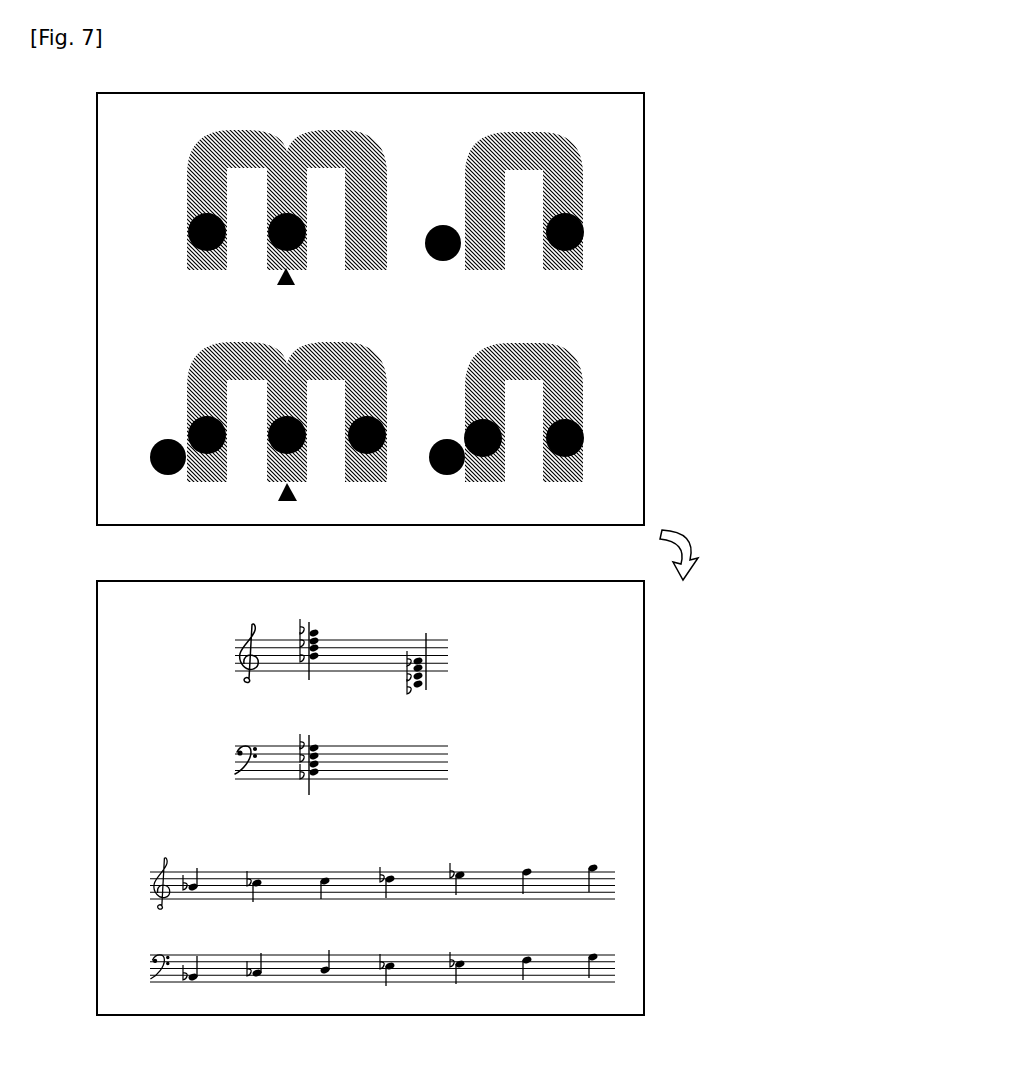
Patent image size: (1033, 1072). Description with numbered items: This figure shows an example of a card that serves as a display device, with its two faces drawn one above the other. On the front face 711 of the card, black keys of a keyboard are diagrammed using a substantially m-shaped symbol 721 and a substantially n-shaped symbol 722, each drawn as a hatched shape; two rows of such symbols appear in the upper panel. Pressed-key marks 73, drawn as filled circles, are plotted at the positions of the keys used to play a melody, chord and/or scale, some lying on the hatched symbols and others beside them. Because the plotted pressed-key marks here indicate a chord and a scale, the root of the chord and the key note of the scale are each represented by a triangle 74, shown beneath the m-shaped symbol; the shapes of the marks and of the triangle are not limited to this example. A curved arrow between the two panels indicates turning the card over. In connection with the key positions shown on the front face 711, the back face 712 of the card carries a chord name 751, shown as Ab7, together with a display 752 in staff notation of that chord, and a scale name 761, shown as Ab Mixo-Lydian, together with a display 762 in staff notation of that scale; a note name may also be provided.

The front face 711 is at (147, 113).
The back face 712 is at (147, 590).
The substantially m-shaped symbol 721 is at (330, 132).
The substantially n-shaped symbol 722 is at (528, 132).
The pressed-key mark 73 is at (582, 222).
The triangle 74 is at (265, 278).
The chord name 751 is at (140, 645).
The display in staff notation 752 is at (443, 715).
The scale name 761 is at (127, 826).
The display in staff notation 762 is at (578, 848).